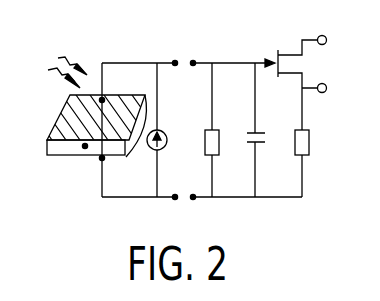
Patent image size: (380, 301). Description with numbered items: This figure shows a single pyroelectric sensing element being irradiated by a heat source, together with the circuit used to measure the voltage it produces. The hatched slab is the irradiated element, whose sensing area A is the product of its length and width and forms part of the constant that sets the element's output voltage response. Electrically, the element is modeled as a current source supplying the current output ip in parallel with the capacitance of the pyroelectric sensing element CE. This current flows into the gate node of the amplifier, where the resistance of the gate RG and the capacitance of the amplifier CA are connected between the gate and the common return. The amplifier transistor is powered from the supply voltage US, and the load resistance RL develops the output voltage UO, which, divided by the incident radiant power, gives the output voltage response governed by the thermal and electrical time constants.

The sensing area A is at (85, 119).
The current output ip is at (171, 143).
The capacitance of the pyroelectric sensing element CE is at (124, 147).
The resistance of the gate RG is at (227, 130).
The capacitance of the amplifier CA is at (270, 130).
The resistance of the load RL is at (316, 163).
The supply voltage US is at (328, 67).
The output voltage UO is at (330, 114).